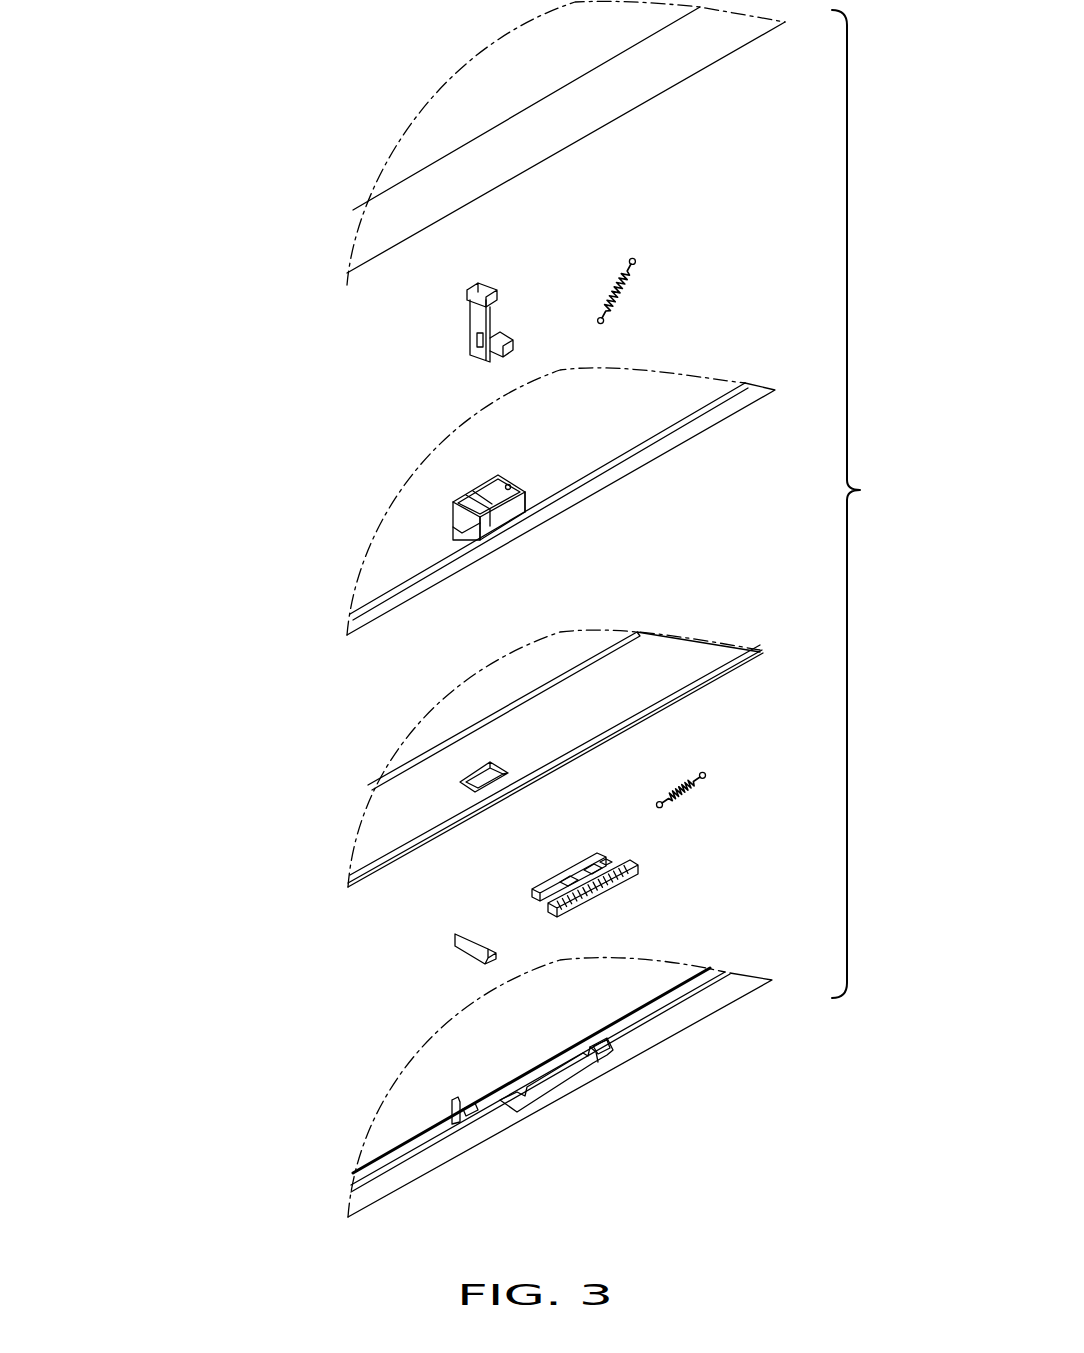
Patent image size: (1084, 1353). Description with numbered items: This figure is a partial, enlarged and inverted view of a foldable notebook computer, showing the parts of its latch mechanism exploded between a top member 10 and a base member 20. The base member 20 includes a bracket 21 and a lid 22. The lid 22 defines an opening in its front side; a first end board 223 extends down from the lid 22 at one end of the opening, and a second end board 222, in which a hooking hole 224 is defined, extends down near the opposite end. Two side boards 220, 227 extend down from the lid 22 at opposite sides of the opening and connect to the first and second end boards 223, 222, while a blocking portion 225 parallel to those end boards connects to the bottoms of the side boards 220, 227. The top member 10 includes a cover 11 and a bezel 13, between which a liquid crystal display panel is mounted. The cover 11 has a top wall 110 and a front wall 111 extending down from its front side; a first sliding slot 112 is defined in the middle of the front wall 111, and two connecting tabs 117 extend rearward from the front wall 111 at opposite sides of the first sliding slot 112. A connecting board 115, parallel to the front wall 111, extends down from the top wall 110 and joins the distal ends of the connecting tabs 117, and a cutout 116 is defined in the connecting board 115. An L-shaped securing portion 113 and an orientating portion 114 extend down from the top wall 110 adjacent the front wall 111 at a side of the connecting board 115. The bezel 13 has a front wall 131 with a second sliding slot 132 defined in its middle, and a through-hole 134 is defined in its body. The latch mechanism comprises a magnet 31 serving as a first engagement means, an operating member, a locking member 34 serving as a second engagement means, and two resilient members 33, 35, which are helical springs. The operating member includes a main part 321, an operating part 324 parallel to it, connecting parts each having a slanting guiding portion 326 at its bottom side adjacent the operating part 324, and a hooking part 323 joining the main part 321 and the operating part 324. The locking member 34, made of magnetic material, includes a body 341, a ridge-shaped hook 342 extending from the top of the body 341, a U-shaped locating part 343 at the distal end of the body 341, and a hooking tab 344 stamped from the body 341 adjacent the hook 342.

The top member 10 is at (222, 863).
The cover 11 is at (385, 1100).
The bezel 13 is at (383, 813).
The base member 20 is at (210, 330).
The bracket 21 is at (347, 273).
The lid 22 is at (397, 500).
The magnet 31 is at (455, 938).
The resilient member 33 is at (697, 787).
The locking member 34 is at (460, 320).
The resilient member 35 is at (623, 268).
The top wall 110 is at (642, 983).
The front wall 111 is at (722, 992).
The first sliding slot 112 is at (545, 1093).
The L-shaped securing portion 113 is at (455, 1122).
The orientating portion 114 is at (473, 1118).
The connecting board 115 is at (602, 1067).
The cutout 116 is at (552, 1068).
The connecting tab 117 is at (603, 1052).
The front wall 131 is at (695, 688).
The second sliding slot 132 is at (570, 760).
The through-hole 134 is at (487, 778).
The side board 220 is at (498, 515).
The second end board 222 is at (527, 482).
The first end board 223 is at (463, 533).
The hooking hole 224 is at (510, 485).
The blocking portion 225 is at (477, 492).
The side board 227 is at (452, 512).
The main part 321 is at (532, 902).
The hooking part 323 is at (603, 870).
The operating part 324 is at (613, 888).
The slanting guiding portion 326 is at (567, 883).
The body 341 is at (487, 318).
The hook 342 is at (505, 334).
The U-shaped locating part 343 is at (478, 292).
The hooking tab 344 is at (476, 338).